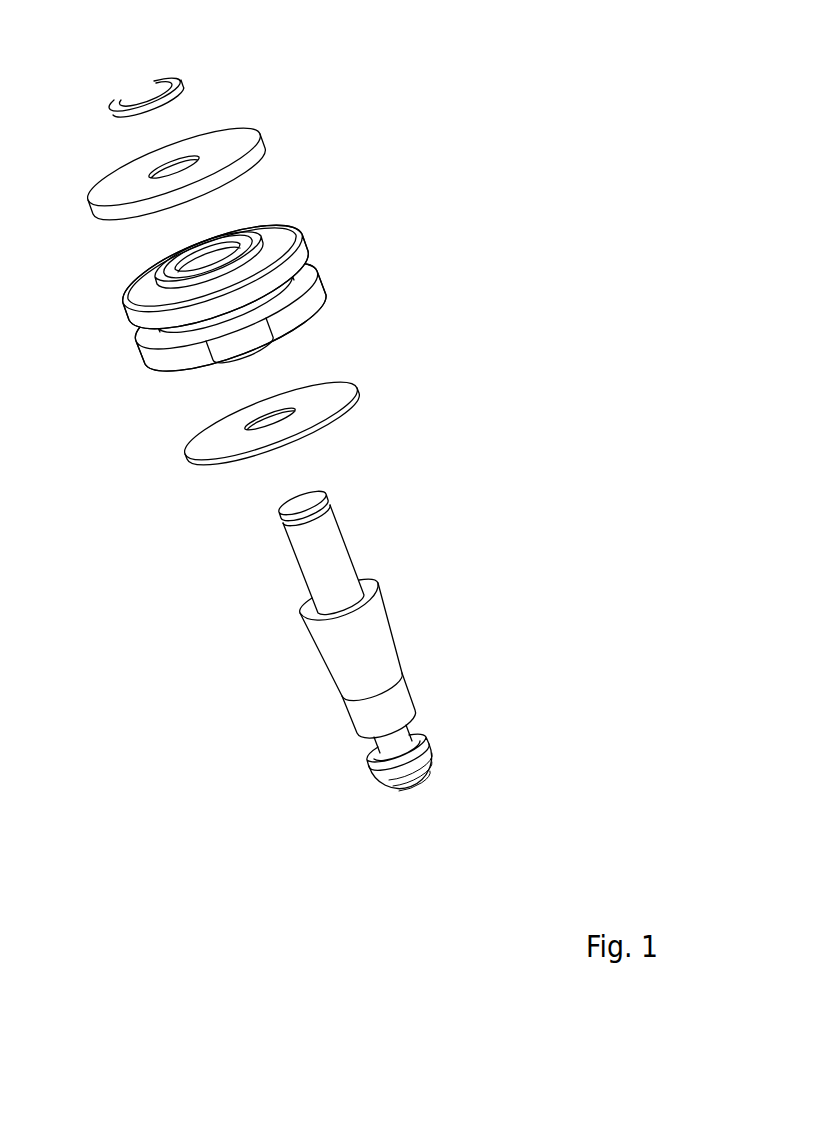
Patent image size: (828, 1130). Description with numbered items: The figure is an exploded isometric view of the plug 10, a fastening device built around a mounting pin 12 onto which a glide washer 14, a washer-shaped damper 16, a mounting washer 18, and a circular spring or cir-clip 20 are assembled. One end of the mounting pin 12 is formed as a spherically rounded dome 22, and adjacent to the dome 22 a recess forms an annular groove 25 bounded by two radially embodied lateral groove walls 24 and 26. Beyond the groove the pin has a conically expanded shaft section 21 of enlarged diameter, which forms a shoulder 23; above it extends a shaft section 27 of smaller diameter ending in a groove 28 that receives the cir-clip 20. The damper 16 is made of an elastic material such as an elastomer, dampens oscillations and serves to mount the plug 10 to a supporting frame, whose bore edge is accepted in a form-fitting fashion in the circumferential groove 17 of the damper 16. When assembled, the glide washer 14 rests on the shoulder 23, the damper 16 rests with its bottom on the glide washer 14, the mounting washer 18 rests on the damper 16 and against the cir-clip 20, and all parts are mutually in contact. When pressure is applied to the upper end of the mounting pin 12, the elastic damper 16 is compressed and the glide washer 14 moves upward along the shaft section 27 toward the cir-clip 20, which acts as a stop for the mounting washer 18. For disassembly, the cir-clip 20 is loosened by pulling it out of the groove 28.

The plug 10 is at (415, 257).
The mounting pin 12 is at (368, 504).
The glide washer 14 is at (333, 393).
The washer-shaped damper 16 is at (300, 245).
The circumferential groove 17 is at (298, 273).
The mounting washer 18 is at (248, 128).
The cir-clip 20 is at (170, 77).
The shaft section 21 is at (378, 660).
The dome 22 is at (430, 778).
The shoulder 23 is at (376, 592).
The lateral groove wall 24 is at (370, 754).
The annular groove 25 is at (422, 725).
The lateral groove wall 26 is at (372, 739).
The shaft section 27 is at (335, 582).
The groove 28 is at (329, 505).